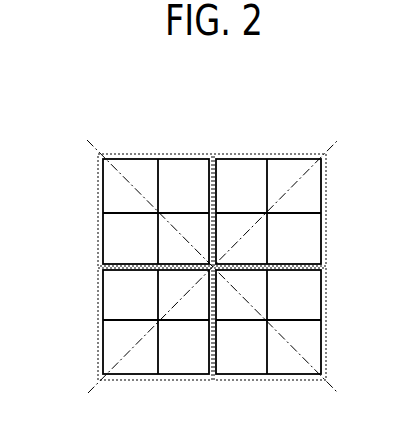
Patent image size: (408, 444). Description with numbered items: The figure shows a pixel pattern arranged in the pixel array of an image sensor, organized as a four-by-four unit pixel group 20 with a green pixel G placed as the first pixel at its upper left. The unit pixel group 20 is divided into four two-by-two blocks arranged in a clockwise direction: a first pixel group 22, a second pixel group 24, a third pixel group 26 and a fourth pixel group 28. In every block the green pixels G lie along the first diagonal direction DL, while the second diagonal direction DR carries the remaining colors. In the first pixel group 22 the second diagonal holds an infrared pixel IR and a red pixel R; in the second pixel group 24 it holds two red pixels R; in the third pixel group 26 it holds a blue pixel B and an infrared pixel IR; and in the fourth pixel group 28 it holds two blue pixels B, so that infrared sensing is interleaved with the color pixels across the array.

The 4×4 unit pixel group 20 is at (223, 125).
The first 2×2 pixel group 22 is at (98, 182).
The second 2×2 pixel group 24 is at (326, 174).
The third 2×2 pixel group 26 is at (326, 351).
The fourth 2×2 pixel group 28 is at (98, 351).